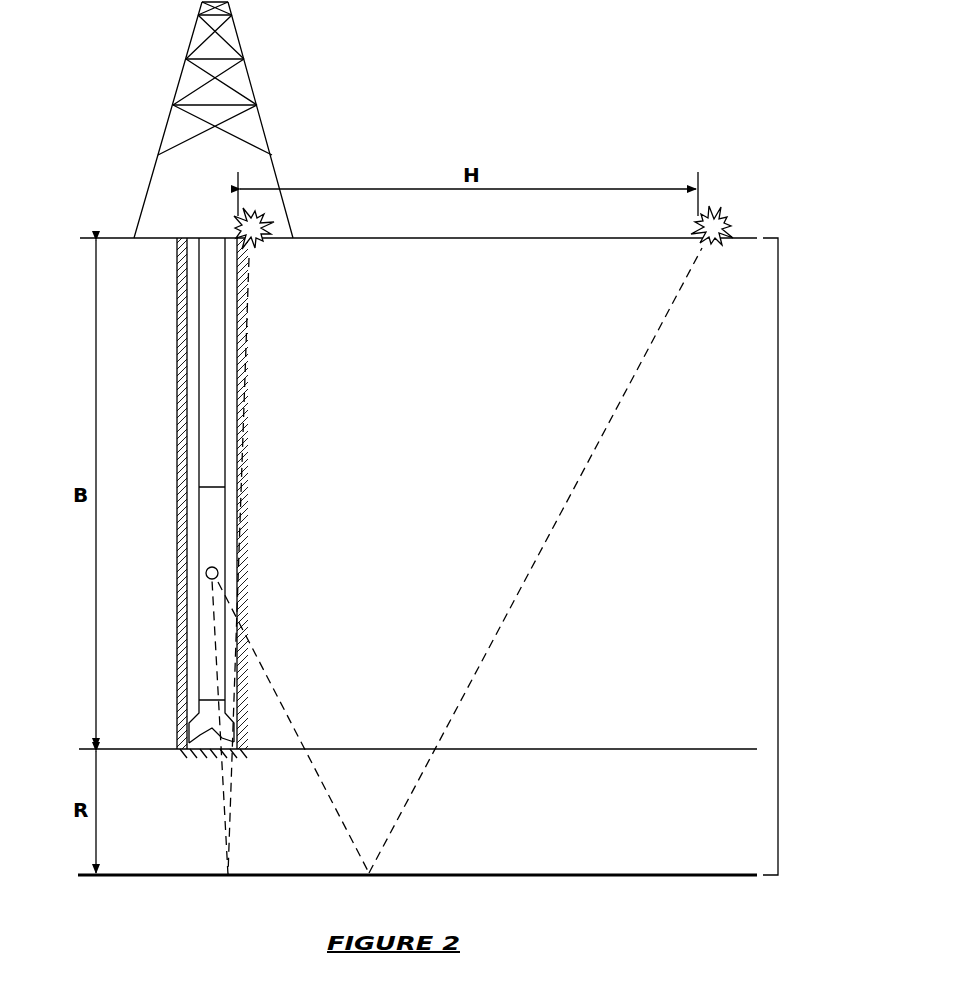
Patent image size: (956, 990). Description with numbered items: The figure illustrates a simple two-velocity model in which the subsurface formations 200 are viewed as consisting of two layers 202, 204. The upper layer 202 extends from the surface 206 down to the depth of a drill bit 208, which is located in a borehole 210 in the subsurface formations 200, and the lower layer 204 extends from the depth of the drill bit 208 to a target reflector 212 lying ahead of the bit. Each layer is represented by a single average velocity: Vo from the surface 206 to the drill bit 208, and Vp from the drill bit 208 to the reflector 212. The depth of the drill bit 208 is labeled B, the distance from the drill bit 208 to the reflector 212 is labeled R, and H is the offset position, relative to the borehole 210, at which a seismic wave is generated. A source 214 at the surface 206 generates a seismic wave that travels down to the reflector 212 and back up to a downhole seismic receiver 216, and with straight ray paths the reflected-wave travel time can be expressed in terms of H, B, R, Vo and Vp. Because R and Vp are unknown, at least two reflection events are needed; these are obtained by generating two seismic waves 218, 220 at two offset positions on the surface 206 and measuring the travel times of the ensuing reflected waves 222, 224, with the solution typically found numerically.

The subsurface formations 200 is at (778, 508).
The layer 202 is at (418, 493).
The layer 204 is at (418, 787).
The surface 206 is at (120, 238).
The drill bit 208 is at (205, 728).
The borehole 210 is at (186, 310).
The target reflector 212 is at (528, 877).
The source 214 is at (260, 242).
The downhole seismic receiver 216 is at (206, 575).
The seismic wave 218 is at (248, 348).
The seismic wave 220 is at (623, 405).
The reflected wave 222 is at (223, 810).
The reflected wave 224 is at (295, 728).